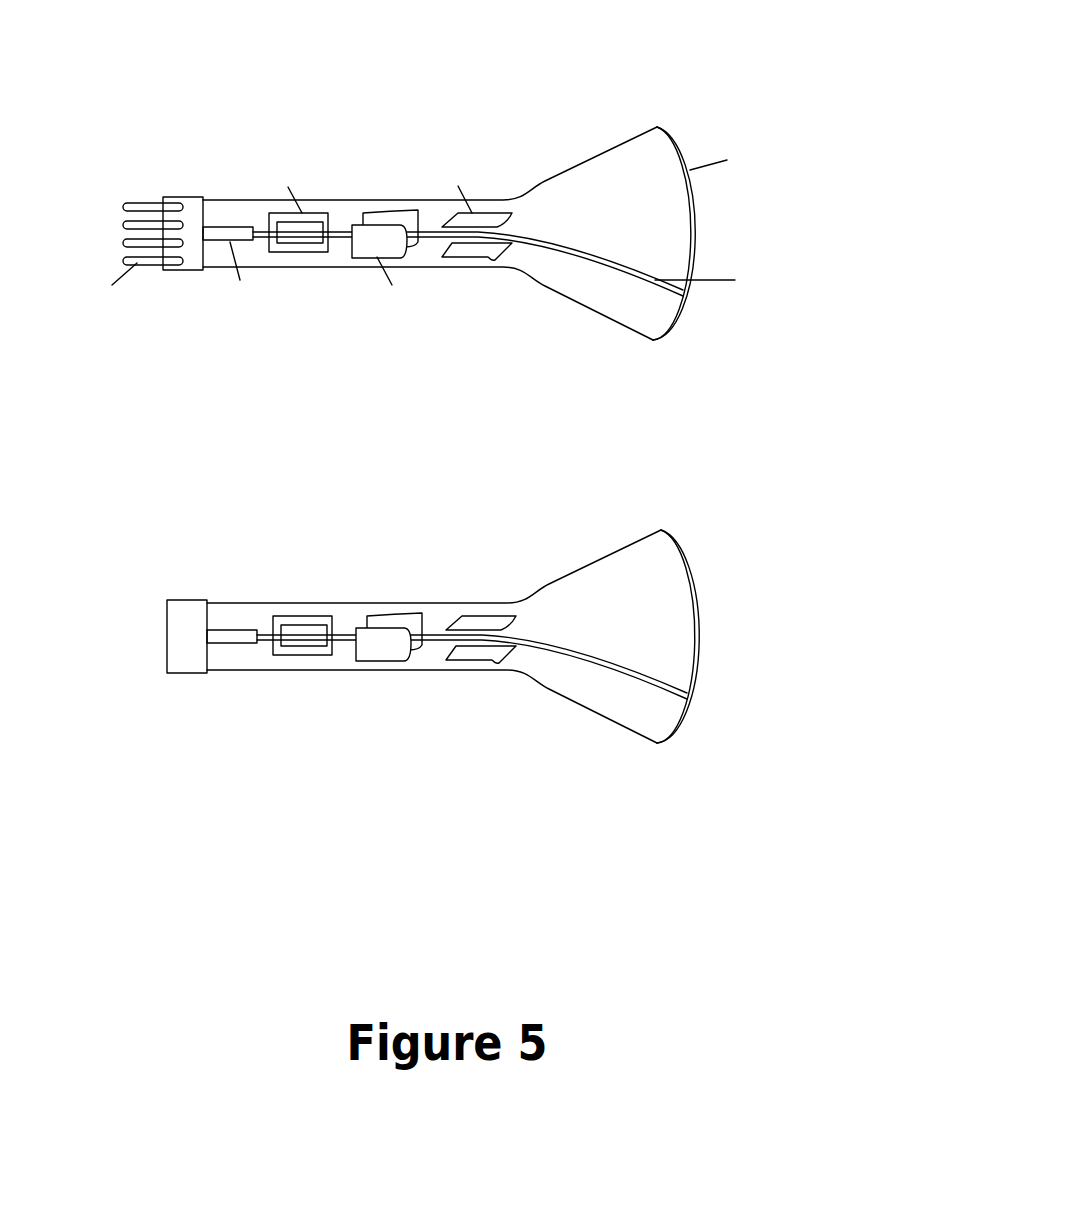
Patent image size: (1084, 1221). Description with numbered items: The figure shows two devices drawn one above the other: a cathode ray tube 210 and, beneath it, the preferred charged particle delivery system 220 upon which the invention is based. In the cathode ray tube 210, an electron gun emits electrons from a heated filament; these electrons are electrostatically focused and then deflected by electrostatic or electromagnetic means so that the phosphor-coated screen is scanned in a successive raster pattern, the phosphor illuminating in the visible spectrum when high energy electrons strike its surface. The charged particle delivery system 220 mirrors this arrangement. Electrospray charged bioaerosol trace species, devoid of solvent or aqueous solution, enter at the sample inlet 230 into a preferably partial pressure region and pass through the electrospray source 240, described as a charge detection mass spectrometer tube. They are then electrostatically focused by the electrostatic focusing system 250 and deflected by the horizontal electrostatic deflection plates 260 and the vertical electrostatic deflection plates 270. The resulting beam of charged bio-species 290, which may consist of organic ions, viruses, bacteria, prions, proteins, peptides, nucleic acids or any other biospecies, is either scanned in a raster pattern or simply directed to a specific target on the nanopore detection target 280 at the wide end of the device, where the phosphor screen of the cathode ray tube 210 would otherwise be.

The cathode ray tube 210 is at (437, 199).
The charged particle delivery system 220 is at (563, 621).
The sample inlet 230 is at (188, 617).
The electrospray source 240 is at (234, 671).
The electrostatic focusing system 250 is at (300, 583).
The horizontal electrostatic deflection plates 260 is at (413, 708).
The vertical electrostatic deflection plates 270 is at (457, 572).
The nanopore detection target 280 is at (782, 618).
The beam of charged bio-species 290 is at (608, 703).